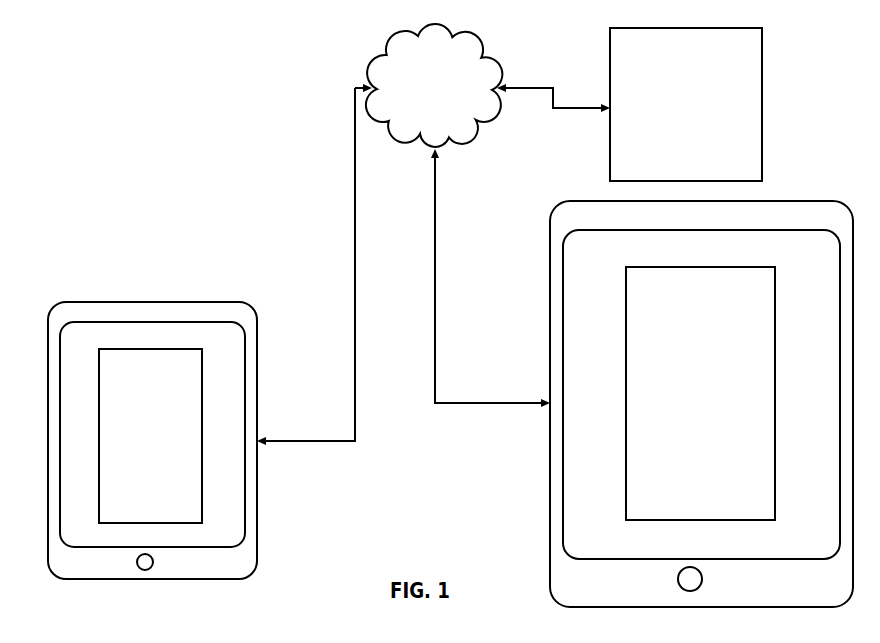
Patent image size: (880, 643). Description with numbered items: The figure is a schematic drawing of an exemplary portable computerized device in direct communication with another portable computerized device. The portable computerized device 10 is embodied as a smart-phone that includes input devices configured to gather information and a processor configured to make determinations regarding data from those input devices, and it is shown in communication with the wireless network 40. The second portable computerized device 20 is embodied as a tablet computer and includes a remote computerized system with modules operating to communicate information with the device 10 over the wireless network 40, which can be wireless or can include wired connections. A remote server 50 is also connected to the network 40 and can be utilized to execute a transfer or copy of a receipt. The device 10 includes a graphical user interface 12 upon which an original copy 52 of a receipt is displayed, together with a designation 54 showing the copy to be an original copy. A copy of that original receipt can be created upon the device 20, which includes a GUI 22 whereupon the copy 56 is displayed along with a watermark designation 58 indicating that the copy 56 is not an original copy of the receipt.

The portable computerized device 10 is at (64, 304).
The graphical user interface 12 is at (246, 492).
The second portable computerized device 20 is at (550, 232).
The GUI 22 is at (563, 463).
The wireless network 40 is at (388, 65).
The remote server 50 is at (622, 68).
The original copy 52 is at (181, 398).
The designation 54 is at (110, 512).
The copy 56 is at (764, 340).
The watermark designation 58 is at (657, 498).